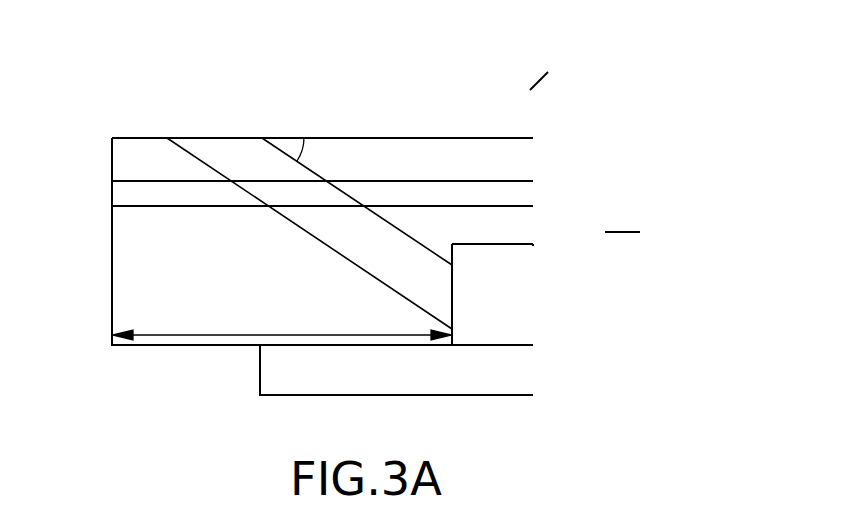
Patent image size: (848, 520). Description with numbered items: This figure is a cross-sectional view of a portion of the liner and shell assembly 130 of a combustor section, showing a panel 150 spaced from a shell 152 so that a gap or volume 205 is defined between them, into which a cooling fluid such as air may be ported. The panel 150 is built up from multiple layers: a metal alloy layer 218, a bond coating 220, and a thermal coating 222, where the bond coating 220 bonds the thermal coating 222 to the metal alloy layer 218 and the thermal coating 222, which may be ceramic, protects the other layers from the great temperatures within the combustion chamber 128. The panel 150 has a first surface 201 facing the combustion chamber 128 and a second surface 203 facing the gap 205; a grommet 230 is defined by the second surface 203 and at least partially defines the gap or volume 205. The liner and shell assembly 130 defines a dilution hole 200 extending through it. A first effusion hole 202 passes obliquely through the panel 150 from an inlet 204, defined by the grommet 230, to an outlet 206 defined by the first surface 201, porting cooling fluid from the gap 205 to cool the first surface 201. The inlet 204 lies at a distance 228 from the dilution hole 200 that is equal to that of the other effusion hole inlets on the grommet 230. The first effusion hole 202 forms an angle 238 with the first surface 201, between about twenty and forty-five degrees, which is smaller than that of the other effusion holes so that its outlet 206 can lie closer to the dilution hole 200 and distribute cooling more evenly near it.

The combustion chamber 128 is at (388, 44).
The liner and shell assembly 130 is at (530, 90).
The panel 150 is at (605, 232).
The shell 152 is at (398, 383).
The dilution hole 200 is at (77, 286).
The first surface 201 is at (430, 138).
The first effusion hole 202 is at (330, 222).
The second surface 203 is at (533, 244).
The inlet 204 is at (452, 293).
The gap or volume 205 is at (524, 286).
The outlet 206 is at (217, 138).
The metal alloy layer 218 is at (506, 237).
The bond coating 220 is at (506, 194).
The thermal coating 222 is at (486, 171).
The equal distance 228 is at (250, 334).
The grommet 230 is at (452, 340).
The angle 238 is at (305, 154).